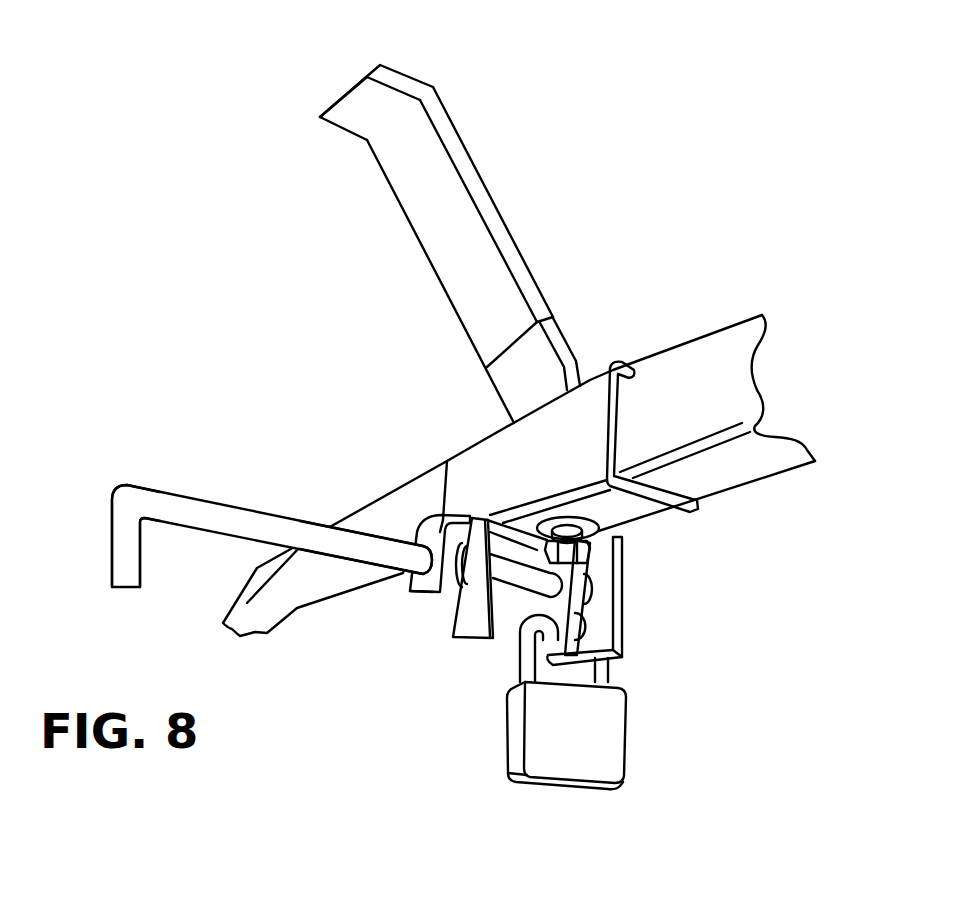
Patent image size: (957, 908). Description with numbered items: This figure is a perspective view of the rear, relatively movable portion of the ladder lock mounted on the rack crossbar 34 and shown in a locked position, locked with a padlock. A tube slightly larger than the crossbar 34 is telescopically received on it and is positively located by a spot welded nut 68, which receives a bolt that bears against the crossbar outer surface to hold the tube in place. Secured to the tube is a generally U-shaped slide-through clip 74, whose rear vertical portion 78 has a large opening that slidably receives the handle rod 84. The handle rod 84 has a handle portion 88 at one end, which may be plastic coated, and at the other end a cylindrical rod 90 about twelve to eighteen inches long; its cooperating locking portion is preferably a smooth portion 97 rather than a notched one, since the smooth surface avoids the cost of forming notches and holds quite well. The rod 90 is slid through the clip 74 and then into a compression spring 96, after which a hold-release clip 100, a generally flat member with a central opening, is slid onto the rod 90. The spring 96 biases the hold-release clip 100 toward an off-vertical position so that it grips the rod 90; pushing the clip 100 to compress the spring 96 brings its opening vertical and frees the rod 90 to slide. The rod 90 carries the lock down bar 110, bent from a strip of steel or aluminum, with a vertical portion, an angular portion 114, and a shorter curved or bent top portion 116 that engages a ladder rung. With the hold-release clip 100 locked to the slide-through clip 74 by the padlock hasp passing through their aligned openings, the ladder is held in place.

The crossbar 34 is at (727, 362).
The angular portion 114 is at (480, 181).
The top portion 116 is at (405, 73).
The slide-through clip 74 is at (404, 598).
The compression spring 96 is at (430, 615).
The handle rod 84 is at (283, 511).
The handle portion 88 is at (122, 552).
The cylindrical rod 90 is at (383, 546).
The hold-release clip 100 is at (459, 643).
The smooth locking portion 97 is at (527, 580).
The nut 68 is at (578, 516).
The rear vertical portion 78 is at (593, 580).
The lock down bar 110 is at (631, 609).